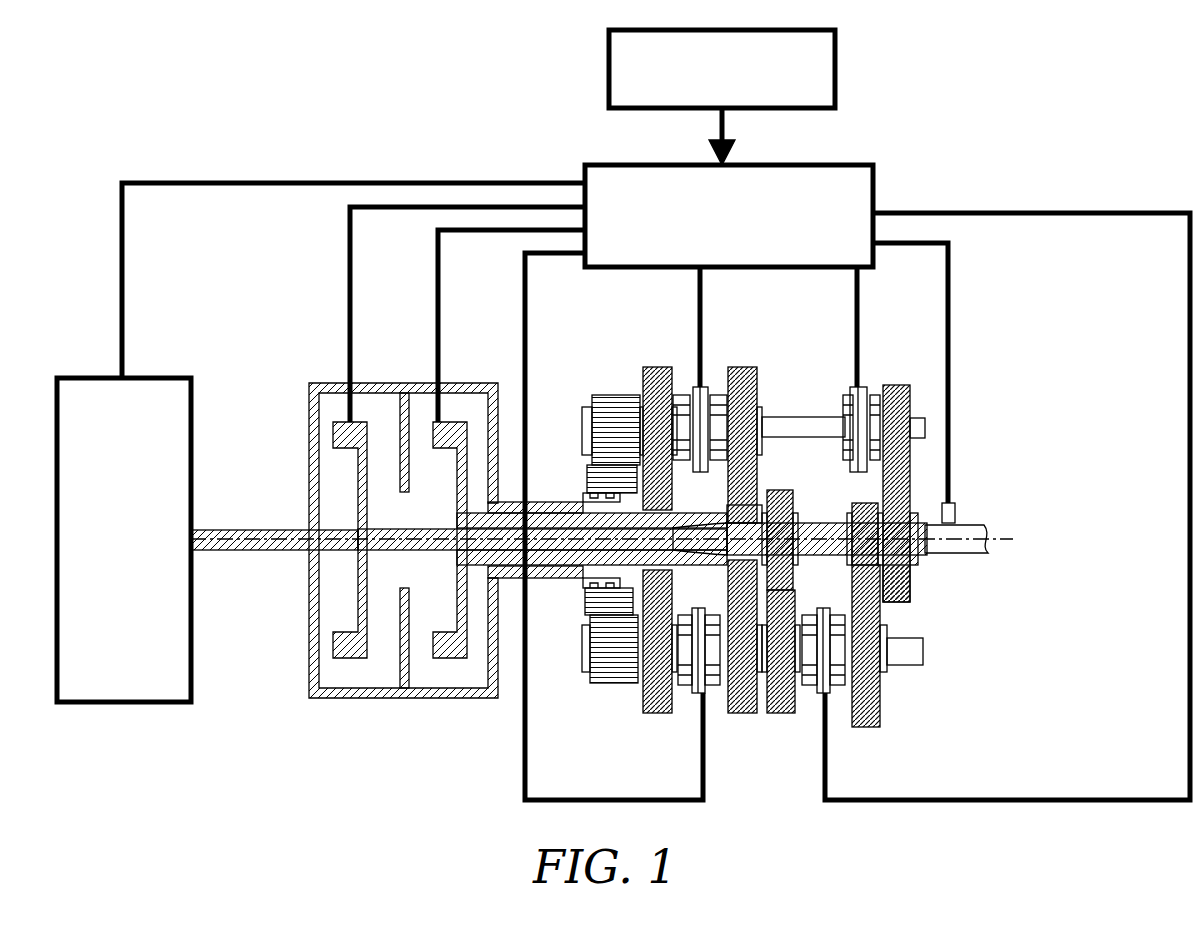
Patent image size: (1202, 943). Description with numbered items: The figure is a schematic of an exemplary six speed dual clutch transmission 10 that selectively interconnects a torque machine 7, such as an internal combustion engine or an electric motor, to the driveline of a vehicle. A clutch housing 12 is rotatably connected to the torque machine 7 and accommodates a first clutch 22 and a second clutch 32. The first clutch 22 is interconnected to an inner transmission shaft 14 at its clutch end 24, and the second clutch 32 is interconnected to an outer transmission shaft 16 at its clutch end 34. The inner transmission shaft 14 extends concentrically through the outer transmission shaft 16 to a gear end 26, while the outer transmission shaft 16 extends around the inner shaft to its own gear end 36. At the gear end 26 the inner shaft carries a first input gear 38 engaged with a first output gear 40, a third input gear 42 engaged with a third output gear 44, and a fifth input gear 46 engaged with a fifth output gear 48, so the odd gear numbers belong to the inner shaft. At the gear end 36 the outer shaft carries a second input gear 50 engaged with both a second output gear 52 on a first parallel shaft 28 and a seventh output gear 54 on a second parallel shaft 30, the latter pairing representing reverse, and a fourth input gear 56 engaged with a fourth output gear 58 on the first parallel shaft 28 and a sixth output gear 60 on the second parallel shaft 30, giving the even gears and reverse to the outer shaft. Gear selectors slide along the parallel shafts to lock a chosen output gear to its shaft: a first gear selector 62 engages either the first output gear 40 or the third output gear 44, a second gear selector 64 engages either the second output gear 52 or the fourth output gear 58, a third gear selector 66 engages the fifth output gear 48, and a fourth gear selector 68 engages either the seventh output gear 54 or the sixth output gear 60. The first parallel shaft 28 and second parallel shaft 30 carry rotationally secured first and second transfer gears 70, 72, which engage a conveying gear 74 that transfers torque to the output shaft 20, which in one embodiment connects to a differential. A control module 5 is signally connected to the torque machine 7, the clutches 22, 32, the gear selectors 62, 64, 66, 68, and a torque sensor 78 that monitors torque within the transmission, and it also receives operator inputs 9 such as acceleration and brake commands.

The control module 5 is at (736, 228).
The torque machine 7 is at (131, 551).
The operator inputs 9 is at (731, 81).
The dual clutch transmission 10 is at (260, 276).
The clutch housing 12 is at (365, 700).
The inner transmission shaft 14 is at (390, 520).
The outer transmission shaft 16 is at (510, 512).
The output shaft 20 is at (962, 555).
The first clutch 22 is at (350, 660).
The clutch end 24 is at (379, 516).
The gear end 26 is at (922, 566).
The first parallel shaft 28 is at (922, 652).
The second parallel shaft 30 is at (795, 425).
The second clutch 32 is at (448, 660).
The clutch end 34 is at (475, 506).
The gear end 36 is at (701, 693).
The first input gear 38 is at (912, 478).
The first output gear 40 is at (865, 730).
The third input gear 42 is at (785, 510).
The third output gear 44 is at (782, 715).
The fifth input gear 46 is at (910, 582).
The fifth output gear 48 is at (895, 386).
The second input gear 50 is at (640, 506).
The second output gear 52 is at (655, 716).
The seventh output gear 54 is at (656, 368).
The fourth input gear 56 is at (758, 515).
The fourth output gear 58 is at (745, 715).
The sixth output gear 60 is at (745, 368).
The first gear selector 62 is at (826, 693).
The second gear selector 64 is at (713, 590).
The third gear selector 66 is at (856, 410).
The fourth gear selector 68 is at (697, 392).
The first transfer gear 70 is at (612, 683).
The second transfer gear 72 is at (616, 395).
The conveying gear 74 is at (590, 600).
The torque sensor 78 is at (952, 512).